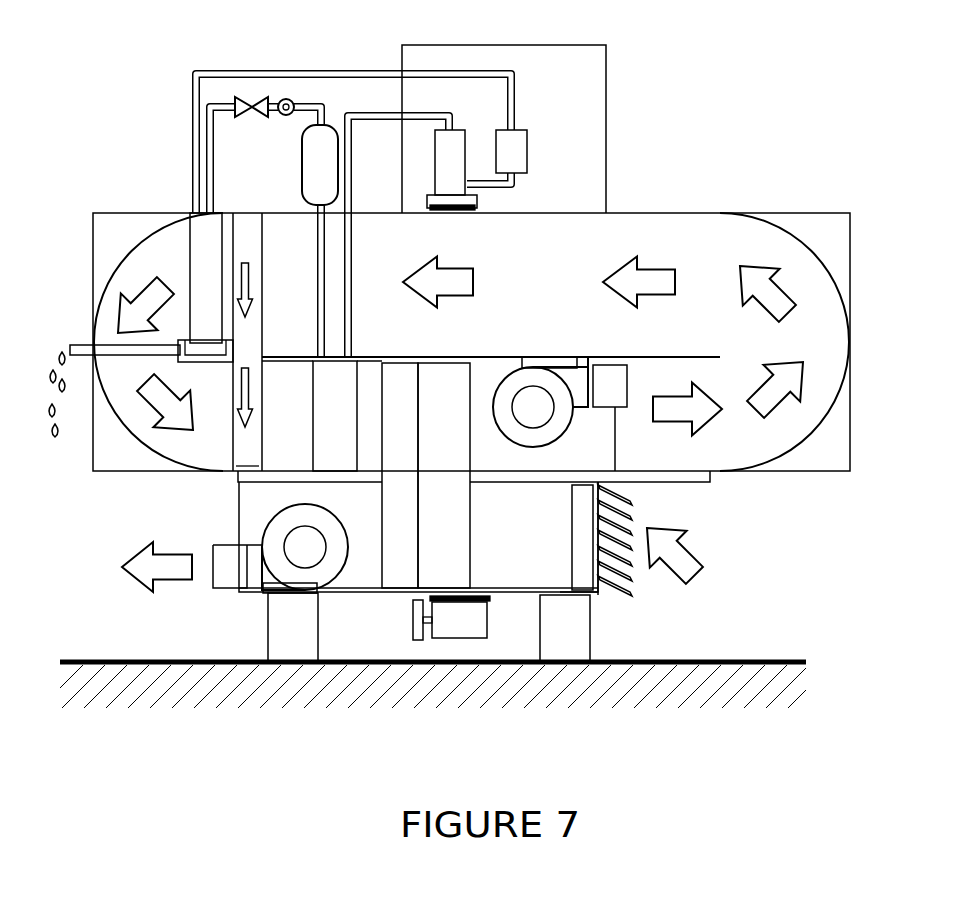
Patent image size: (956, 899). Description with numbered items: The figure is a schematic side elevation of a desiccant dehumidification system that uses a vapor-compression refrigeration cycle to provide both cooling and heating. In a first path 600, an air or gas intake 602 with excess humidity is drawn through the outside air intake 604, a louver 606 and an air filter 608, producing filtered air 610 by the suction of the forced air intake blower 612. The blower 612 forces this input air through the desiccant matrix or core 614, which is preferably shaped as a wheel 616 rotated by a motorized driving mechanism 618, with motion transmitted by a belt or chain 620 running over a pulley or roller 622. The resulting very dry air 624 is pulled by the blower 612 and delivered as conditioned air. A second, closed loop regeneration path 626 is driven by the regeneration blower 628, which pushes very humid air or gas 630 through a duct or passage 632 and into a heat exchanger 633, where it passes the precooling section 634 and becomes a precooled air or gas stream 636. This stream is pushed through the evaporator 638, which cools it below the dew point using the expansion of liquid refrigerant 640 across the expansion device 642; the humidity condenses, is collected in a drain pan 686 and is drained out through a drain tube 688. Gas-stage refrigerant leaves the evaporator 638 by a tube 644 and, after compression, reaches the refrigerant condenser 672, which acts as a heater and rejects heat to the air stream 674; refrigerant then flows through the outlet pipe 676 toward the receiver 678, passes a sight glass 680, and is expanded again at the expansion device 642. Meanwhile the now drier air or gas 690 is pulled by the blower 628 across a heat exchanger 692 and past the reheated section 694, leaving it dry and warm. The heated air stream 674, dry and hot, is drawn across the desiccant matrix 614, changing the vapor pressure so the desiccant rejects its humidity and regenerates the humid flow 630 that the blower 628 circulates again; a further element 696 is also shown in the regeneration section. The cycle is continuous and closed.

The first path 600 is at (537, 573).
The air or gas intake 602 is at (685, 555).
The outside air intake 604 is at (655, 510).
The louver 606 is at (628, 577).
The air filter 608 is at (597, 595).
The filtered air 610 is at (505, 575).
The forced air intake blower 612 is at (260, 572).
The desiccant matrix or core 614 is at (398, 513).
The wheel 616 is at (390, 570).
The motorized driving mechanism 618 is at (458, 627).
The belt or chain 620 is at (422, 537).
The pulley or roller 622 is at (415, 623).
The very dry air 624 is at (165, 570).
The closed loop regeneration path 626 is at (655, 237).
The regeneration blower 628 is at (560, 414).
The very humid air or gas 630 is at (458, 280).
The duct or passage 632 is at (835, 357).
The heat exchanger 633 is at (248, 340).
The precooling section 634 is at (250, 287).
The precooled air or gas stream 636 is at (227, 247).
The evaporator 638 is at (183, 215).
The liquid refrigerant 640 is at (212, 153).
The expansion device 642 is at (244, 101).
The tube 644 is at (329, 143).
The refrigerant condenser 672 is at (320, 393).
The air stream 674 is at (365, 372).
The pipe 676 is at (325, 285).
The receiver 678 is at (317, 177).
The sight glass 680 is at (288, 99).
The drain pan 686 is at (200, 357).
The drain tube 688 is at (102, 343).
The air or gas 690 is at (175, 415).
The heat exchanger 692 is at (238, 412).
The reheated section 694 is at (247, 448).
The chamber 696 is at (287, 427).